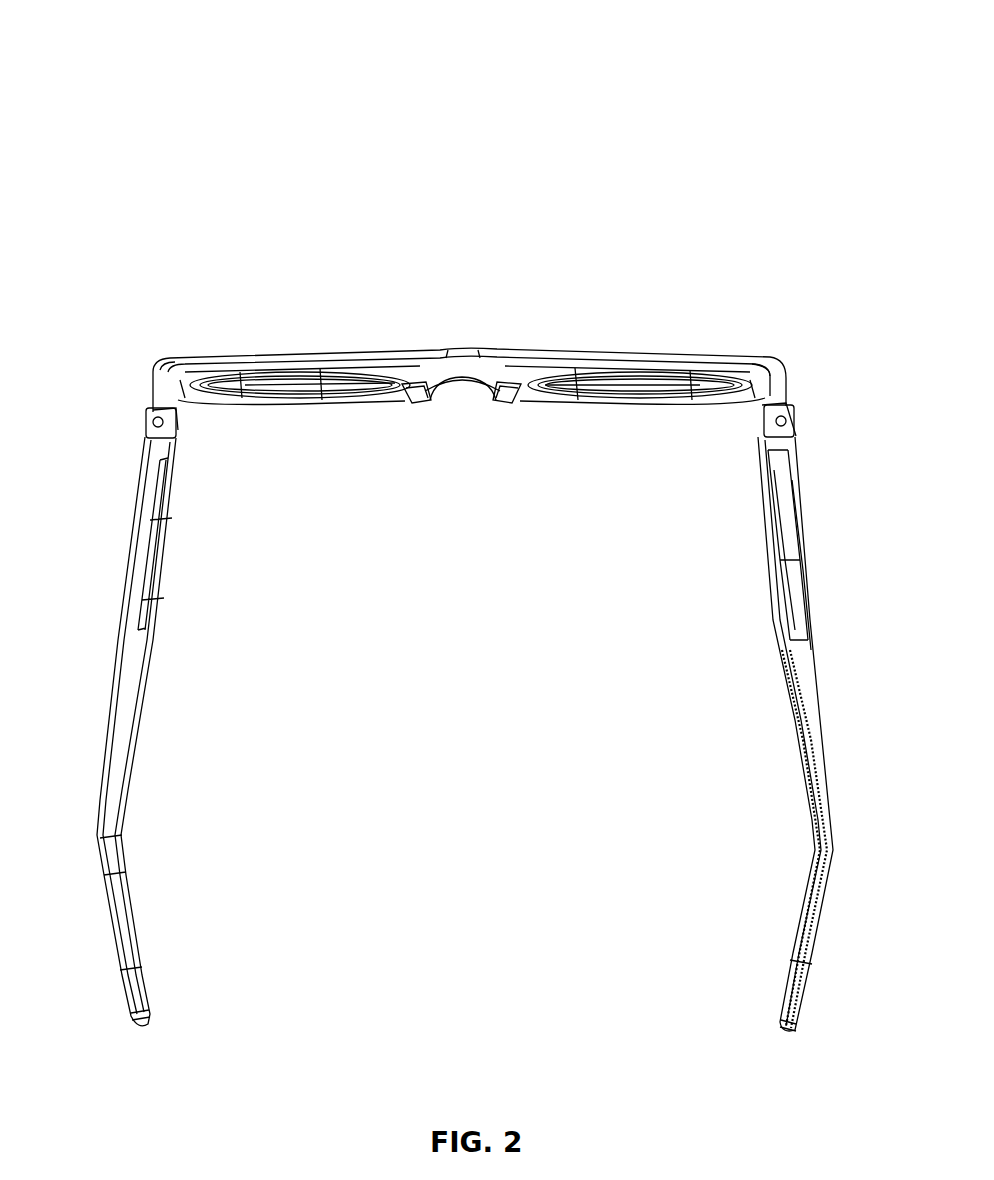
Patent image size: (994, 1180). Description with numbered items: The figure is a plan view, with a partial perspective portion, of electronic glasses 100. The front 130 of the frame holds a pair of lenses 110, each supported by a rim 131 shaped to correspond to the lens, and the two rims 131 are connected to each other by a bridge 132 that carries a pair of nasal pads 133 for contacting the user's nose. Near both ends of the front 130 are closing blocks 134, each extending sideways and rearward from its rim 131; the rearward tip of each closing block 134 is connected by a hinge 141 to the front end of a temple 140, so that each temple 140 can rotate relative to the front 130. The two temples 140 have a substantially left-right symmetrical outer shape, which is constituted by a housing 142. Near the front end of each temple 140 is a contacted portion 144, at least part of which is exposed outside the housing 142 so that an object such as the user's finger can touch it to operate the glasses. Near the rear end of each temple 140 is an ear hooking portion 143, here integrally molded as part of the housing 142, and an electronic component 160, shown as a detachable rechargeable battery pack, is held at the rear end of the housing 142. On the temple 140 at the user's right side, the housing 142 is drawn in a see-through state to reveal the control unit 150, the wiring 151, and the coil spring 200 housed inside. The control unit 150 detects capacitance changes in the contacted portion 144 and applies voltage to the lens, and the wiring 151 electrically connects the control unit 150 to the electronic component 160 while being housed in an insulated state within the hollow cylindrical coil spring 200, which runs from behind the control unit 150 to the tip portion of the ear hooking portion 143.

The electronic glasses 100 is at (351, 34).
The front 130 is at (396, 336).
The lens 110 is at (258, 372).
The rim 131 is at (288, 362).
The bridge 132 is at (463, 348).
The nasal pad 133 is at (420, 404).
The closing block 134 is at (153, 360).
The temple 140 is at (128, 785).
The hinge 141 is at (145, 408).
The housing 142 is at (157, 731).
The ear hooking portion 143 is at (130, 1008).
The contacted portion 144 is at (798, 512).
The control unit 150 is at (790, 585).
The wiring 151 is at (810, 735).
The electronic component 160 is at (148, 1025).
The coil spring 200 is at (825, 813).